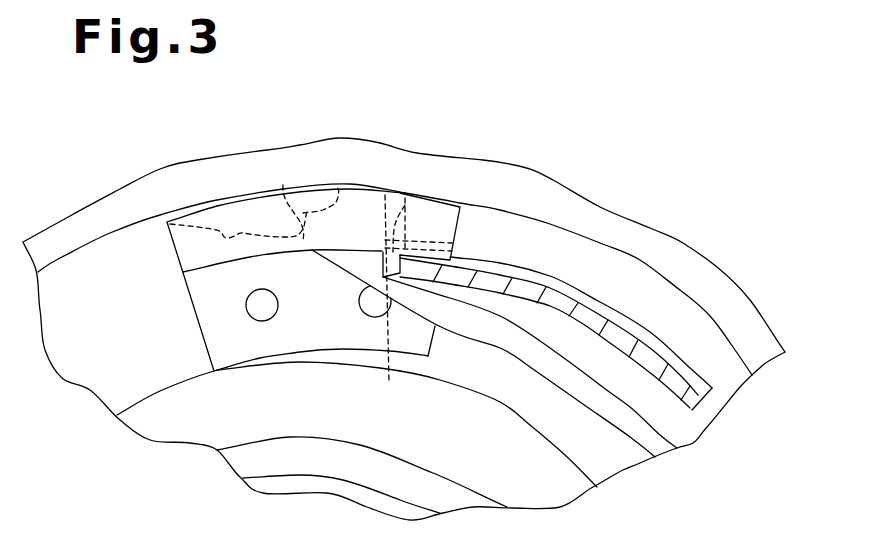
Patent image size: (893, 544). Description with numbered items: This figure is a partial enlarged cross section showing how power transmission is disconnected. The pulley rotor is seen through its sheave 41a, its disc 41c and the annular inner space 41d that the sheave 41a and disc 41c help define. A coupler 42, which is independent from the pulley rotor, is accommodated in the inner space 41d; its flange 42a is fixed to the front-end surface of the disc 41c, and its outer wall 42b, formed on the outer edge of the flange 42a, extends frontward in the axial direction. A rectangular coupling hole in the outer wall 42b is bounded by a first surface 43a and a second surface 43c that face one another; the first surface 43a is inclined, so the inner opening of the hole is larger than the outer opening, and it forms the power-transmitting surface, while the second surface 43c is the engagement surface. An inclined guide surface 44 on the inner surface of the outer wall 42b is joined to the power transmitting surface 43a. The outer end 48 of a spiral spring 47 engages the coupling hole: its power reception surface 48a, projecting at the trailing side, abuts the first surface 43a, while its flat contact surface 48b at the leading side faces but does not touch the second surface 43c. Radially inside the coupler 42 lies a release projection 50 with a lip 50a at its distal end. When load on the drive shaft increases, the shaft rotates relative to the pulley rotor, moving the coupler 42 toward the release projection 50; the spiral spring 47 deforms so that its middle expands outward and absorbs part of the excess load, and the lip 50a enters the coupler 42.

The sheave 41a is at (682, 254).
The disc 41c is at (706, 328).
The annular inner space 41d is at (128, 353).
The coupler 42 is at (201, 345).
The flange 42a is at (297, 337).
The outer wall 42b is at (193, 257).
The first surface 43a is at (338, 190).
The second surface 43c is at (403, 192).
The inclined guide surface 44 is at (215, 209).
The spiral spring 47 is at (497, 403).
The outer end 48 is at (315, 263).
The power reception surface 48a is at (283, 185).
The contact surface 48b is at (385, 307).
The release projection 50 is at (692, 408).
The lip 50a is at (603, 314).